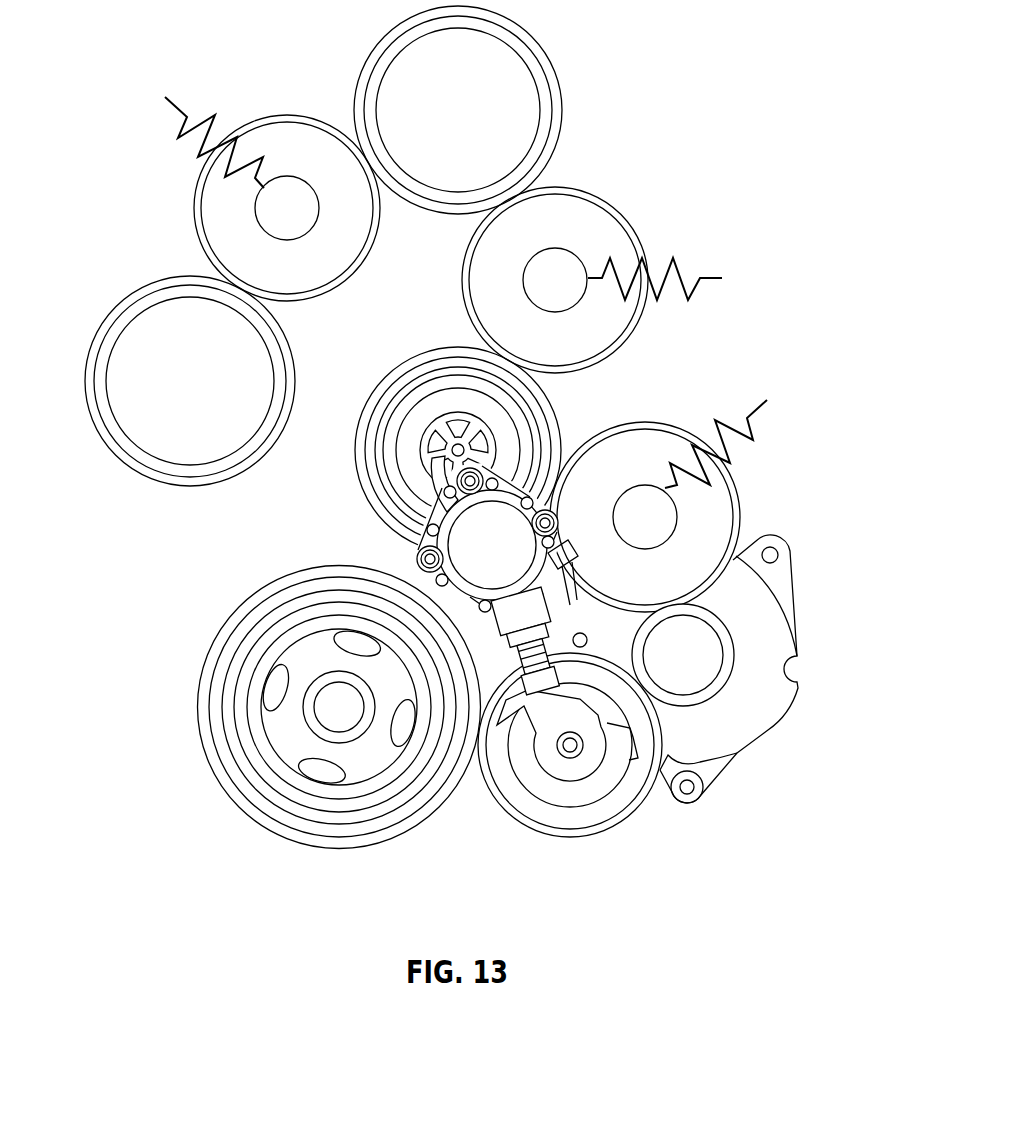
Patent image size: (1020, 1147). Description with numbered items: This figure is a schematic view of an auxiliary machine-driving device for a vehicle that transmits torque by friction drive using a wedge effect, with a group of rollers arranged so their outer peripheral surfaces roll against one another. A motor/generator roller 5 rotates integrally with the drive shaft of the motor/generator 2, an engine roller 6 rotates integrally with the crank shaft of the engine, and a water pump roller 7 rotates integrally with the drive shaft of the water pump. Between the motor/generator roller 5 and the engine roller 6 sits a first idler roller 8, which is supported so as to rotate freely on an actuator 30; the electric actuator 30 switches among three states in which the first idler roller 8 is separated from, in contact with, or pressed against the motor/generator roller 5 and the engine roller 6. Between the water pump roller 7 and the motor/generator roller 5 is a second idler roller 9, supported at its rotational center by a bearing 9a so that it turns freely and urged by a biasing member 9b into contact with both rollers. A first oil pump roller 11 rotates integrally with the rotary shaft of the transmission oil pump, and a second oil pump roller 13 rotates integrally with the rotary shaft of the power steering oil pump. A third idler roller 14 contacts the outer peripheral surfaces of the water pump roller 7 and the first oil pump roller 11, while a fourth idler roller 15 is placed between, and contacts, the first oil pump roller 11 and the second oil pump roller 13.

The motor/generator 2 is at (782, 715).
The motor/generator roller 5 is at (727, 643).
The engine roller 6 is at (237, 702).
The water pump roller 7 is at (360, 486).
The first idler roller 8 is at (572, 820).
The second idler roller 9 is at (740, 505).
The bearing 9a is at (662, 527).
The biasing member 9b is at (752, 405).
The first oil pump roller 11 is at (561, 95).
The second oil pump roller 13 is at (100, 328).
The third idler roller 14 is at (620, 208).
The fourth idler roller 15 is at (280, 115).
The actuator 30 is at (432, 548).